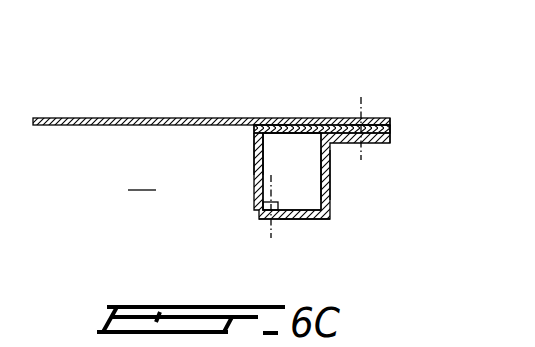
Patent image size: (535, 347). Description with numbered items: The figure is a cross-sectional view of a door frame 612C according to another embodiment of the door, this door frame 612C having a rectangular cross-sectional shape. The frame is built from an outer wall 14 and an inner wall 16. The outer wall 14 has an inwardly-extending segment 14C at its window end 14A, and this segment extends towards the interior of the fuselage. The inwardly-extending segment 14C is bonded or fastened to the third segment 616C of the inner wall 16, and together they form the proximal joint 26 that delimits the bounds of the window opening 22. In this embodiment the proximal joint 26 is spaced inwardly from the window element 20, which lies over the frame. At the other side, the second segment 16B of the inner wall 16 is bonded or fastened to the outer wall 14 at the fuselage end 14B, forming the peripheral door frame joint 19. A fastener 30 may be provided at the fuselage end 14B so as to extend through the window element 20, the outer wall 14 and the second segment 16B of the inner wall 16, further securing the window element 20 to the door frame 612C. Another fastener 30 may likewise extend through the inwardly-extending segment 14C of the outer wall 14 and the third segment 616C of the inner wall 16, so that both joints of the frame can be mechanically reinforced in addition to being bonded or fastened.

The outer wall 14 is at (317, 118).
The window end 14A is at (266, 117).
The fuselage end 14B is at (380, 117).
The inwardly-extending segment 14C is at (256, 157).
The inner wall 16 is at (340, 197).
The second segment 16B is at (326, 178).
The peripheral door frame joint 19 is at (399, 128).
The window element 20 is at (88, 128).
The window opening 22 is at (144, 176).
The proximal joint 26 is at (259, 213).
The fastener 30 is at (361, 100).
The door frame 612C is at (220, 184).
The third segment 616C is at (305, 219).